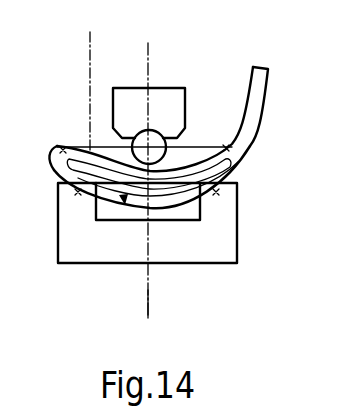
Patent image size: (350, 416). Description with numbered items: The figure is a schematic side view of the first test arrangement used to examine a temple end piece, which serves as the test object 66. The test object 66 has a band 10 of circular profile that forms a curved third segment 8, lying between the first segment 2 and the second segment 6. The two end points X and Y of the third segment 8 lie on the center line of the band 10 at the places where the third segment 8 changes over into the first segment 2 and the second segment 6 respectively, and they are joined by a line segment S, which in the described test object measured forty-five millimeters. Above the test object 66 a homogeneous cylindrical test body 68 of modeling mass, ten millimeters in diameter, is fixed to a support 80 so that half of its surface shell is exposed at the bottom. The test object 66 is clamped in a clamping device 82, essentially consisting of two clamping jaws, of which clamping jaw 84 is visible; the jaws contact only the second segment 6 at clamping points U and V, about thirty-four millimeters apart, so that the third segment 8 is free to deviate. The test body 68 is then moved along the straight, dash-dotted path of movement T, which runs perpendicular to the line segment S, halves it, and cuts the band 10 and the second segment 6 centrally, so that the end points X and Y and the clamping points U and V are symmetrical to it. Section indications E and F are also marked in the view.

The first segment 2 is at (252, 126).
The second segment 6 is at (188, 220).
The third segment 8 is at (126, 196).
The band 10 is at (106, 193).
The test object 66 is at (276, 96).
The cylindrical test body 68 is at (158, 142).
The support 80 is at (132, 104).
The clamping device 82 is at (248, 262).
The clamping jaw 84 is at (220, 230).
The section line E is at (80, 43).
The section line F is at (138, 305).
The path of movement T is at (150, 63).
The line segment S is at (198, 148).
The end point X is at (58, 146).
The end point Y is at (232, 148).
The clamping point U is at (76, 196).
The clamping point V is at (219, 192).